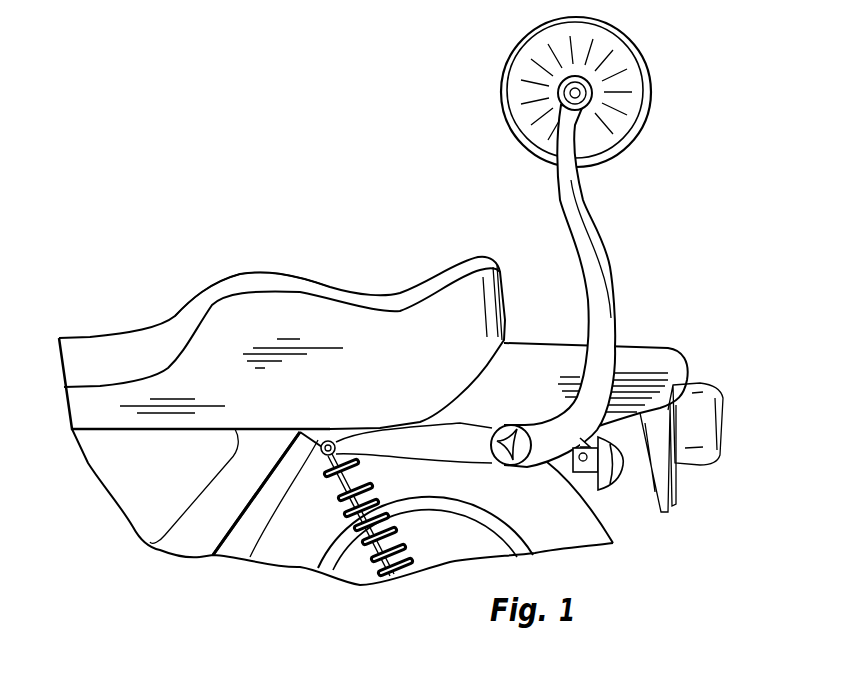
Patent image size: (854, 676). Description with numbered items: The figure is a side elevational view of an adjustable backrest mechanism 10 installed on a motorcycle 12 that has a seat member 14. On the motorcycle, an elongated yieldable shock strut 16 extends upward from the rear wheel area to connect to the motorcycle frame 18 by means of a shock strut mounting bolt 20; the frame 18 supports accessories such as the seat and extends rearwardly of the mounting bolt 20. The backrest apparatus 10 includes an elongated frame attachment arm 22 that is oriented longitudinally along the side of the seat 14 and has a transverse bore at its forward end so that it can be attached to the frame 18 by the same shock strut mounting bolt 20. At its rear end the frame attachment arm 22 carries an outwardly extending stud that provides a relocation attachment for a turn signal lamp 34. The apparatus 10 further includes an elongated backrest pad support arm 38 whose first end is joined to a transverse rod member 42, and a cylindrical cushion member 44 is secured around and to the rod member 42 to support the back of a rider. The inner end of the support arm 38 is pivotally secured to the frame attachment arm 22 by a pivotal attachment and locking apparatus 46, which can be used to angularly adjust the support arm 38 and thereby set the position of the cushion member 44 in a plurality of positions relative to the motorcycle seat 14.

The adjustable backrest mechanism 10 is at (617, 252).
The motorcycle 12 is at (368, 262).
The seat member 14 is at (270, 275).
The shock strut 16 is at (341, 498).
The motorcycle frame 18 is at (284, 456).
The shock strut mounting bolt 20 is at (329, 441).
The frame attachment arm 22 is at (464, 456).
The turn signal lamp 34 is at (613, 493).
The backrest pad support arm 38 is at (600, 310).
The transverse rod member 42 is at (587, 90).
The cushion member 44 is at (650, 108).
The pivotal attachment and locking apparatus 46 is at (522, 470).